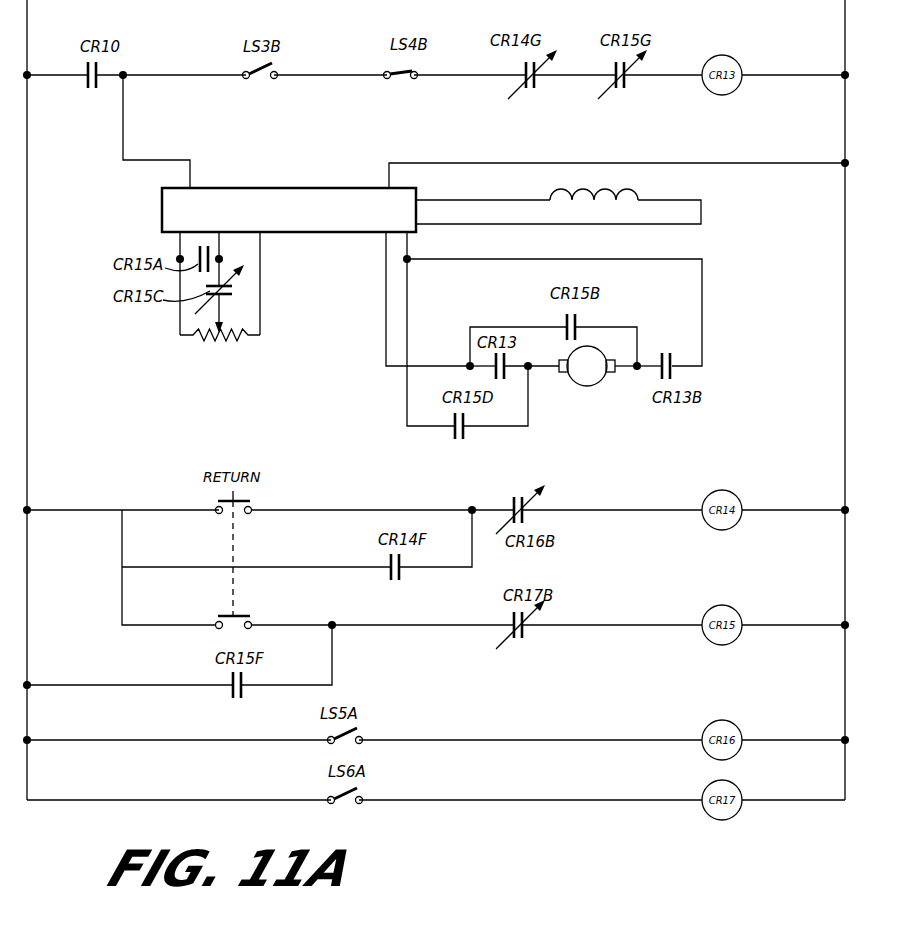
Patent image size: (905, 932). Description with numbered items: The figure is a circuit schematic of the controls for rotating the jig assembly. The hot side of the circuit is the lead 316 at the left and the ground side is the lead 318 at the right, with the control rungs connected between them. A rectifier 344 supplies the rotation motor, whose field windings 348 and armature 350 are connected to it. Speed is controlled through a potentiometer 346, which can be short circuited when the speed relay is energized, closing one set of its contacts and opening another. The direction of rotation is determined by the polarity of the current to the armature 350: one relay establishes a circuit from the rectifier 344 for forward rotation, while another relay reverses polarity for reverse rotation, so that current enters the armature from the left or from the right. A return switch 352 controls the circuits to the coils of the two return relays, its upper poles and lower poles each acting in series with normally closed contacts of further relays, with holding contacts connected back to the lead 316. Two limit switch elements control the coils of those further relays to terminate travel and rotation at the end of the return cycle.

The lead 316 is at (27, 360).
The lead 318 is at (845, 285).
The rectifier 344 is at (342, 188).
The potentiometer 346 is at (215, 340).
The rotation motor field windings 348 is at (606, 198).
The armature 350 is at (592, 386).
The return switch 352 is at (252, 501).